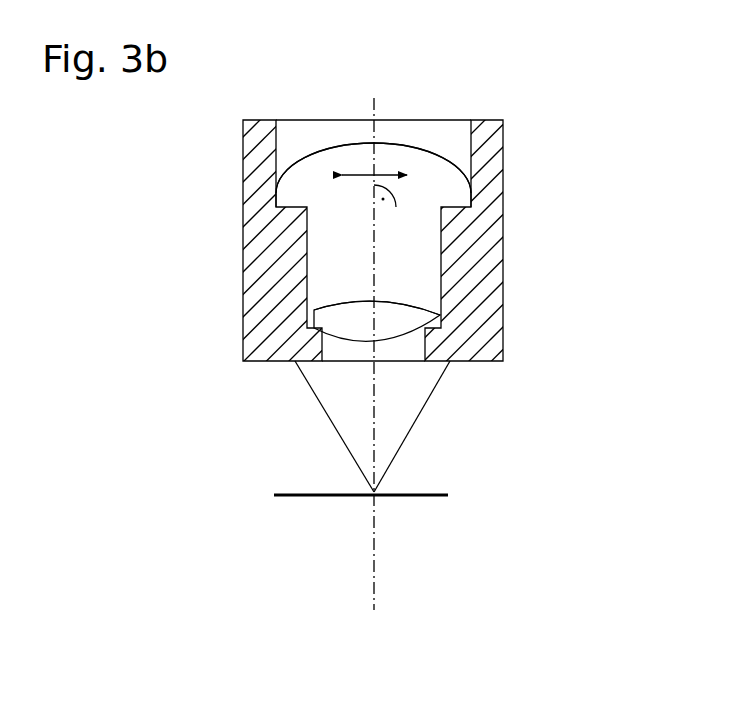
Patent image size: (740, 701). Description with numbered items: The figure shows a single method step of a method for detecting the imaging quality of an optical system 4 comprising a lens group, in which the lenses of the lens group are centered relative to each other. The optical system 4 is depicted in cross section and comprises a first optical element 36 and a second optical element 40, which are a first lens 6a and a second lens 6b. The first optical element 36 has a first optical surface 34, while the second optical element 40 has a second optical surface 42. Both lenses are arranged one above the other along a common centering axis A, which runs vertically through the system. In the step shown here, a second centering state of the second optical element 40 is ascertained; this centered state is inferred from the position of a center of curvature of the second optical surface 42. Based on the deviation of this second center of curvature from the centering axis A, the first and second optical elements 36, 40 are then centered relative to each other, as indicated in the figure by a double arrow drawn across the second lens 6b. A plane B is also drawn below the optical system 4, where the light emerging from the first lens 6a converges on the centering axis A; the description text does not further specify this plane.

The optical system 4 is at (243, 172).
The first lens 6a is at (478, 318).
The second lens 6b is at (466, 174).
The first optical surface 34 is at (335, 305).
The first optical element 36 is at (433, 316).
The second optical element 40 is at (456, 179).
The second optical surface 42 is at (422, 148).
The centering axis A is at (374, 565).
The target surface B is at (448, 493).